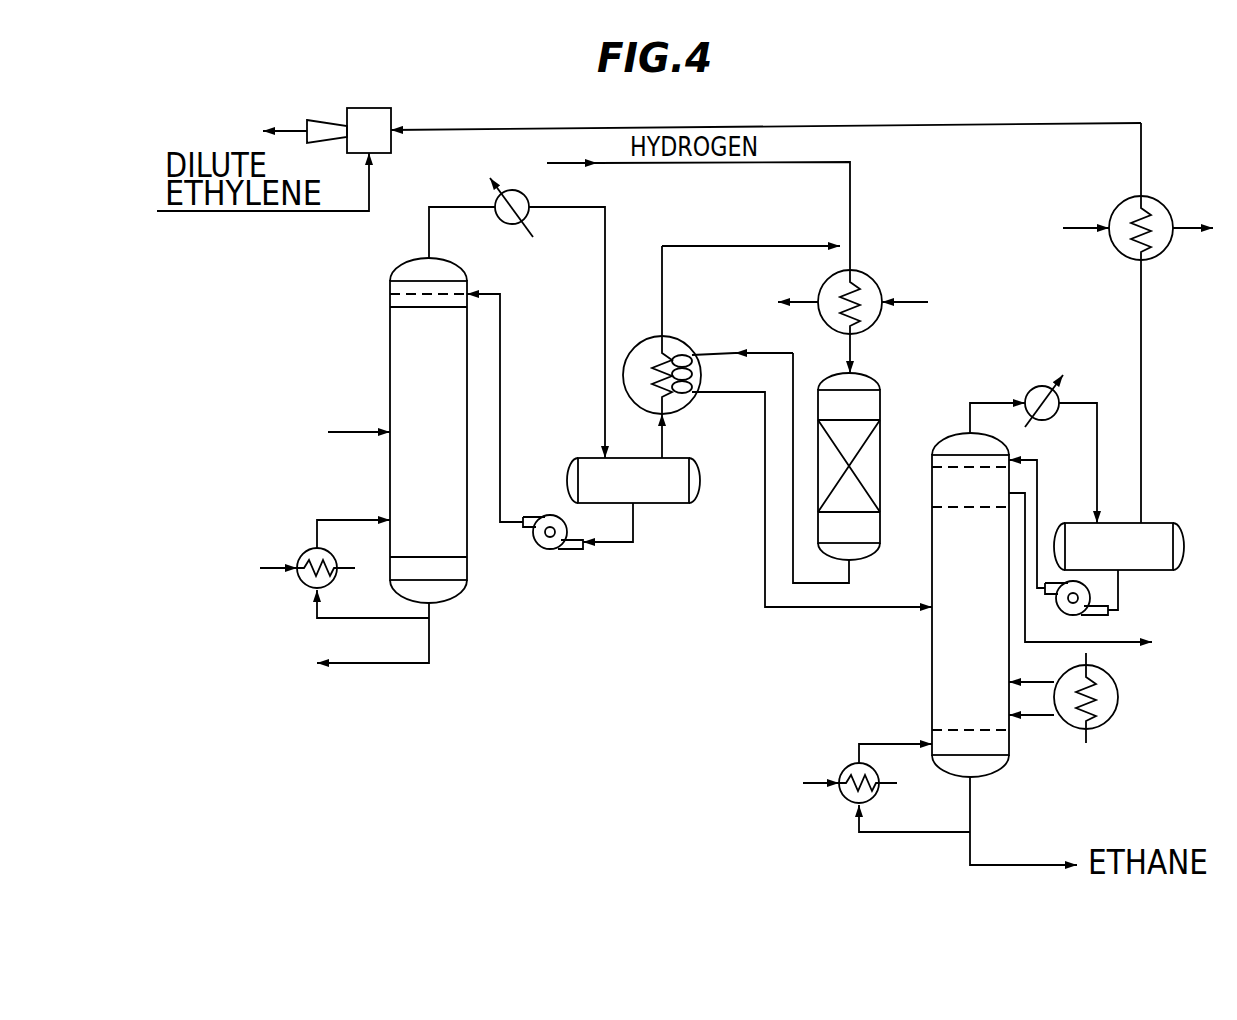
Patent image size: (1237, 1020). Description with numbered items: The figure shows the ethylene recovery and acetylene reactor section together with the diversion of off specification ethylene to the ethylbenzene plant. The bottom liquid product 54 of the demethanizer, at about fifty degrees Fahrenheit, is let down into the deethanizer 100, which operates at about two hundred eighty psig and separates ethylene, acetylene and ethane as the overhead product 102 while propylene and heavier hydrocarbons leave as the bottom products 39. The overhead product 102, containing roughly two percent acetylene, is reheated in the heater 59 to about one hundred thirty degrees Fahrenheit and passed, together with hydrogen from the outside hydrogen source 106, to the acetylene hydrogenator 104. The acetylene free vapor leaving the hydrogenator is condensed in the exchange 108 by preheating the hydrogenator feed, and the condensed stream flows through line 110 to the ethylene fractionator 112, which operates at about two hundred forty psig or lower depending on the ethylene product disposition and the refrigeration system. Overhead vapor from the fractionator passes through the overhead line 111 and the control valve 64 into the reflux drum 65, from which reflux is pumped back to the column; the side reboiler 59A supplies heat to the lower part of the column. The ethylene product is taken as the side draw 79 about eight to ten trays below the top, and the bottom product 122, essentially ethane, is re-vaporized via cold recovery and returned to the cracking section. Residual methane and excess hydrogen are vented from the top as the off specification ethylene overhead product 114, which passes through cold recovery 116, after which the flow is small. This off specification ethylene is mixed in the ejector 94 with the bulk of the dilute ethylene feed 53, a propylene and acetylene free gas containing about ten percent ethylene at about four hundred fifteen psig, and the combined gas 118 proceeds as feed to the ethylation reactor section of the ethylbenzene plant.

The ejector 94 is at (368, 108).
The combined gas 118 is at (283, 130).
The dilute ethylene feed 53 is at (342, 213).
The overhead product 114 is at (1143, 372).
The cold recovery 116 is at (1122, 202).
The outside hydrogen source 106 is at (852, 188).
The heater 59 is at (852, 246).
The acetylene hydrogenator 104 is at (882, 403).
The exchange 108 is at (688, 402).
The condensed C2 stream line 110 is at (803, 608).
The overhead product 102 is at (665, 436).
The deethanizer 100 is at (388, 330).
The bottom liquid product 54 is at (350, 432).
The bottom products 39 is at (395, 665).
The ethylene fractionator 112 is at (930, 680).
The ethylene fractionator overhead line 111 is at (1000, 402).
The control valve 64 is at (1090, 403).
The reflux drum 65 is at (1118, 585).
The side draw 79 is at (1120, 645).
The side reboiler 59A is at (1112, 720).
The bottom product 122 is at (990, 866).